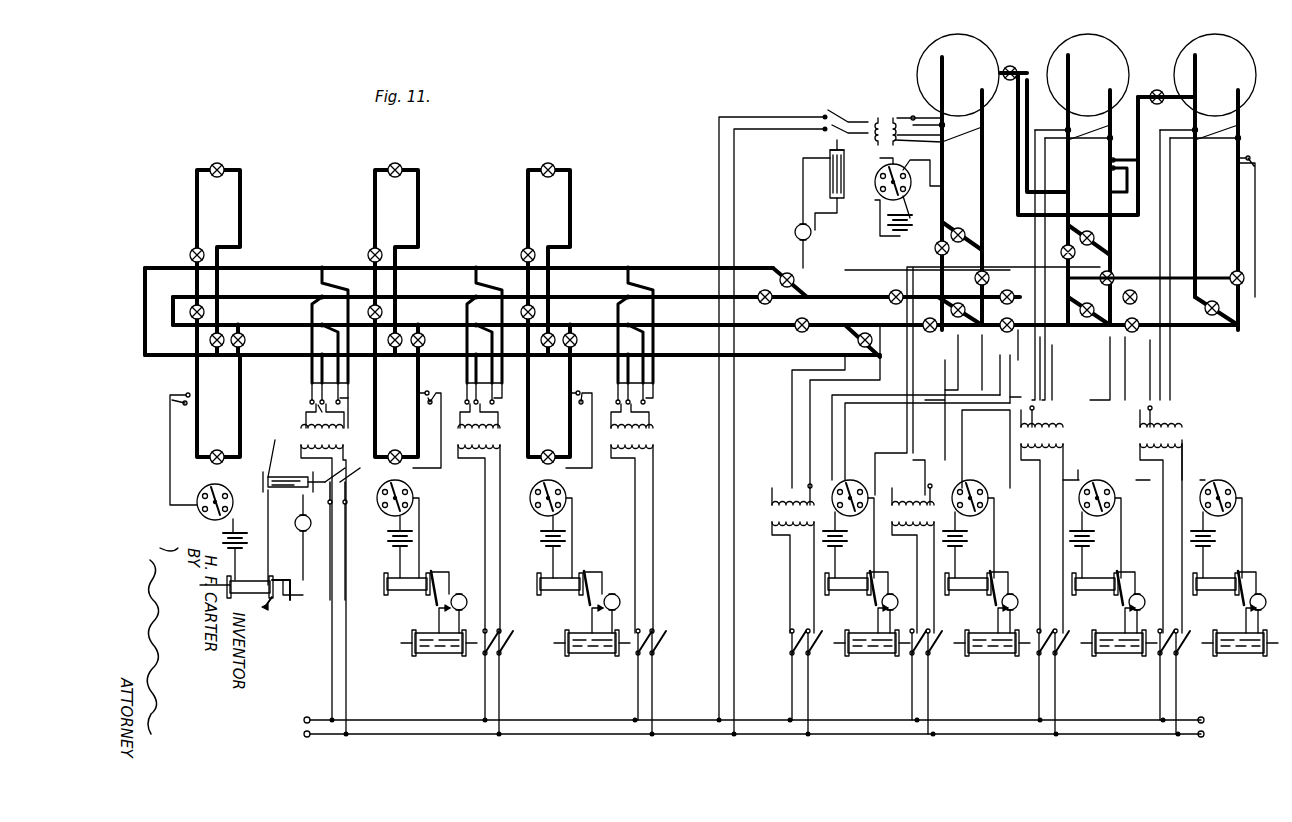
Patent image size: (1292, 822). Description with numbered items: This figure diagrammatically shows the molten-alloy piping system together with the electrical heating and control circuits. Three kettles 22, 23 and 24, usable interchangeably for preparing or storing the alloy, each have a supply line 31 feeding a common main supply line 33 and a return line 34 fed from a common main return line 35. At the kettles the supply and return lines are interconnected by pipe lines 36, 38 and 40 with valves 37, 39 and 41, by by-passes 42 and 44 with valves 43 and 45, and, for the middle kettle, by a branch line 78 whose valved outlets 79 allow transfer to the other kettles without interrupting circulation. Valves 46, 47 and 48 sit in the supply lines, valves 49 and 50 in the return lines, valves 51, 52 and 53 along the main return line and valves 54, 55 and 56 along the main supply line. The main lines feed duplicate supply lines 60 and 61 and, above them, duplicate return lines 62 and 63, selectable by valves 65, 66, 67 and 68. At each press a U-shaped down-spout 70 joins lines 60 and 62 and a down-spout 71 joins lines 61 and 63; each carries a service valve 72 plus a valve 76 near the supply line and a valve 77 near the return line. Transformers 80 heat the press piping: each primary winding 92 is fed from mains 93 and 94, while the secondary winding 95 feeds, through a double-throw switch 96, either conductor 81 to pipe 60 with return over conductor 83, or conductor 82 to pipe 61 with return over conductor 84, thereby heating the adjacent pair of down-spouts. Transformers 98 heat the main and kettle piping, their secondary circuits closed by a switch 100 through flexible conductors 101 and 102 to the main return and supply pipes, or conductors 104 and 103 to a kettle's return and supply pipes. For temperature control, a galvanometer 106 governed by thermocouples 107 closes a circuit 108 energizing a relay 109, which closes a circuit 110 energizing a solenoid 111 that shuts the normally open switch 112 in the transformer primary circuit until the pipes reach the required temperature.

The kettle 22 is at (995, 46).
The kettle 23 is at (1123, 46).
The kettle 24 is at (1247, 46).
The supply line 31 is at (982, 194).
The main supply line 33 is at (1077, 358).
The return line 34 is at (958, 190).
The main return line 35 is at (880, 297).
The pipe line 36 is at (982, 392).
The valve 37 is at (945, 402).
The pipe line 38 is at (1125, 358).
The valve 39 is at (1106, 358).
The pipe line 40 is at (1235, 327).
The valve 41 is at (1207, 310).
The by-pass 42 is at (980, 244).
The valve 43 is at (964, 233).
The by-pass 44 is at (1099, 249).
The valve 45 is at (1098, 238).
The valve 46 is at (987, 279).
The valve 47 is at (1100, 280).
The valve 48 is at (1230, 280).
The valve 49 is at (935, 250).
The valve 50 is at (1064, 252).
The valve 51 is at (893, 300).
The valve 52 is at (1020, 305).
The valve 53 is at (1140, 280).
The valve 54 is at (1018, 364).
The valve 55 is at (1140, 330).
The valve 56 is at (866, 330).
The supply line 60 is at (669, 354).
The supply line 61 is at (696, 373).
The return line 62 is at (653, 276).
The return line 63 is at (695, 276).
The valve 65 is at (796, 328).
The valve 66 is at (878, 355).
The valve 67 is at (762, 268).
The valve 68 is at (792, 268).
The branch line 70 is at (240, 408).
The branch line 71 is at (244, 202).
The service valve 72 is at (222, 166).
The valve 76 is at (238, 337).
The valve 77 is at (190, 303).
The branch line 78 is at (1157, 90).
The valved outlet 79 is at (1012, 70).
The transformer 80 is at (302, 443).
The conductor 81 is at (340, 392).
The conductor 82 is at (312, 386).
The conductor 83 is at (312, 318).
The conductor 84 is at (348, 369).
The primary winding 92 is at (342, 446).
The main 93 is at (383, 720).
The main 94 is at (383, 734).
The secondary winding 95 is at (340, 428).
The double-throw switch 96 is at (318, 409).
The transformer 98 is at (775, 523).
The switch 100 is at (915, 113).
The flexible conductor 101 is at (878, 385).
The flexible conductor 102 is at (830, 370).
The flexible conductor 103 is at (950, 140).
The flexible conductor 104 is at (946, 134).
The galvanometer 106 is at (231, 486).
The thermocouple 107 is at (190, 393).
The electrical circuit 108 is at (236, 546).
The relay 109 is at (250, 603).
The electrical circuit 110 is at (313, 590).
The solenoid 111 is at (288, 495).
The switch 112 is at (355, 497).